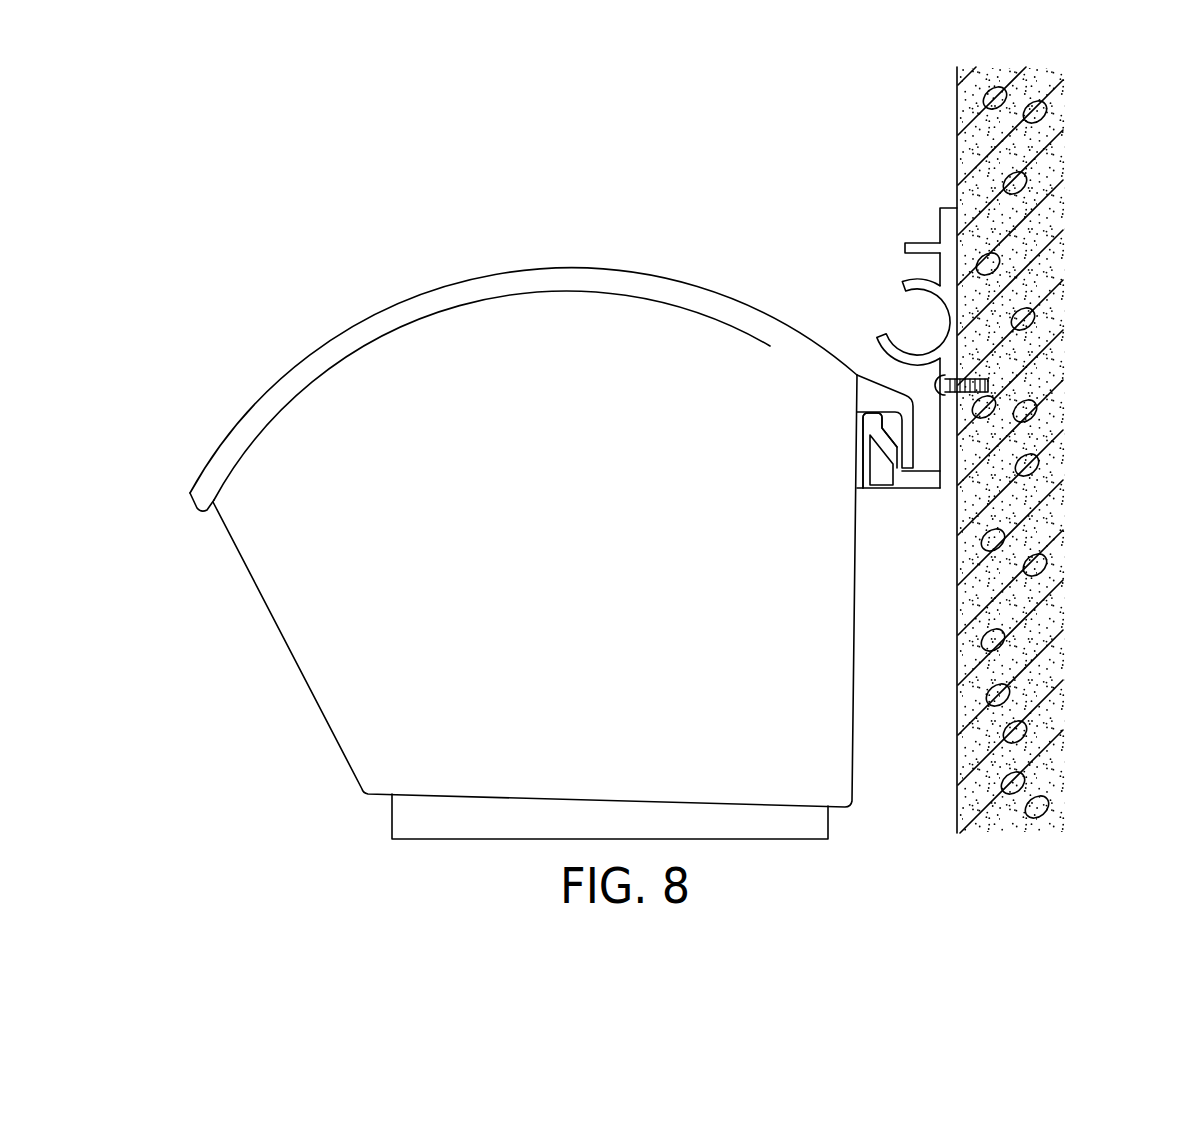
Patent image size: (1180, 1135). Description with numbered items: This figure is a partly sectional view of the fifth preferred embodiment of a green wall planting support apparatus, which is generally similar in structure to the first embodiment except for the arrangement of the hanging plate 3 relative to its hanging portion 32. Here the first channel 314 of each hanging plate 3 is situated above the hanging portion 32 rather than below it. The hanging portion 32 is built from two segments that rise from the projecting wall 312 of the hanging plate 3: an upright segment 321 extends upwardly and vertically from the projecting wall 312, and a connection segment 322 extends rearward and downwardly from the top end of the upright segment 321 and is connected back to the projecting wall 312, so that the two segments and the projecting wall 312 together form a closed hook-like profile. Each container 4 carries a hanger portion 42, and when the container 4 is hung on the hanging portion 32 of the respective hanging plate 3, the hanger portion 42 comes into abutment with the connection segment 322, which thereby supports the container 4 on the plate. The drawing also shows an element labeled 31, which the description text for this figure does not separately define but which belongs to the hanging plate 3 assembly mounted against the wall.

The hanging plate 3 is at (973, 424).
The mounting plate 31 is at (973, 310).
The projecting wall 312 is at (940, 484).
The first channel 314 is at (918, 302).
The hanging portion 32 is at (846, 417).
The upright segment 321 is at (867, 470).
The connection segment 322 is at (895, 460).
The container 4 is at (549, 252).
The hanger portion 42 is at (900, 432).